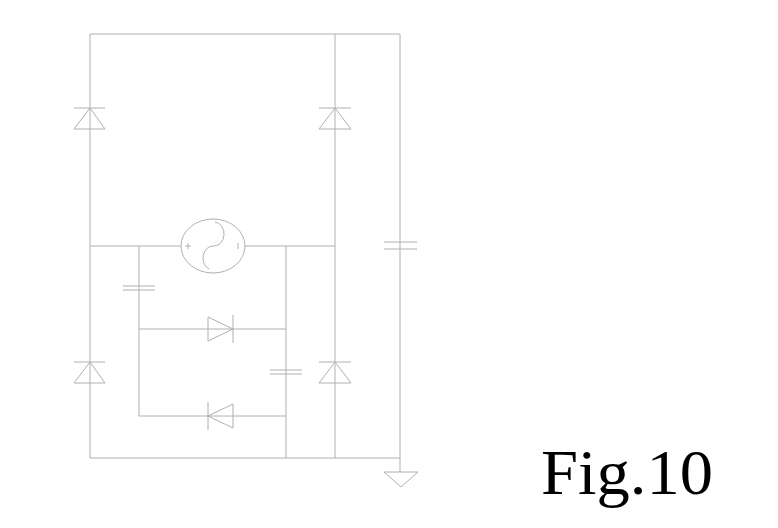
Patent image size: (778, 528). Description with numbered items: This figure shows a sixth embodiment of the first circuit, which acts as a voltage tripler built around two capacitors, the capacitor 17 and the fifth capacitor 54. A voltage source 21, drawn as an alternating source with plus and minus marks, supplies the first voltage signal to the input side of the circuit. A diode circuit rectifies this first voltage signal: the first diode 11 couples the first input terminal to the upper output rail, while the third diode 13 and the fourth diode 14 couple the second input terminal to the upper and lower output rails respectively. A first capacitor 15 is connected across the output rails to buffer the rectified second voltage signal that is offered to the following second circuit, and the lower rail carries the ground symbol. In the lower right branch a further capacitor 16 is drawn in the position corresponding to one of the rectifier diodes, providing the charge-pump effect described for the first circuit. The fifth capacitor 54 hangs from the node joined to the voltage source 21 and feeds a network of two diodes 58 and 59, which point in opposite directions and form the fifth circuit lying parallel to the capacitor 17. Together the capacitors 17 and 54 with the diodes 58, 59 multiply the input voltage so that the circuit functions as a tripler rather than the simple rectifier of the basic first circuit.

The first diode 11 is at (349, 120).
The third diode 13 is at (64, 122).
The fourth diode 14 is at (64, 376).
The first capacitor 15 is at (417, 248).
The second capacitor 16 is at (350, 375).
The second capacitor 17 is at (275, 361).
The voltage source 21 is at (213, 233).
The fifth capacitor 54 is at (155, 291).
The diode 58 is at (215, 318).
The diode 59 is at (214, 405).